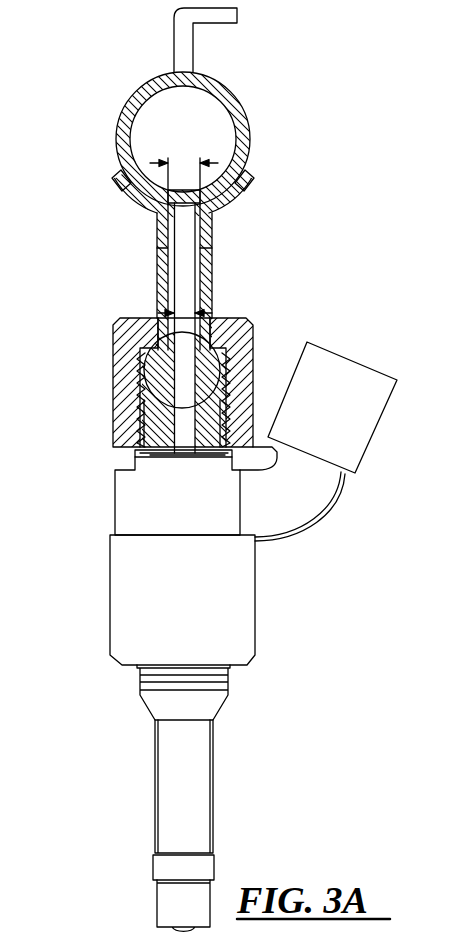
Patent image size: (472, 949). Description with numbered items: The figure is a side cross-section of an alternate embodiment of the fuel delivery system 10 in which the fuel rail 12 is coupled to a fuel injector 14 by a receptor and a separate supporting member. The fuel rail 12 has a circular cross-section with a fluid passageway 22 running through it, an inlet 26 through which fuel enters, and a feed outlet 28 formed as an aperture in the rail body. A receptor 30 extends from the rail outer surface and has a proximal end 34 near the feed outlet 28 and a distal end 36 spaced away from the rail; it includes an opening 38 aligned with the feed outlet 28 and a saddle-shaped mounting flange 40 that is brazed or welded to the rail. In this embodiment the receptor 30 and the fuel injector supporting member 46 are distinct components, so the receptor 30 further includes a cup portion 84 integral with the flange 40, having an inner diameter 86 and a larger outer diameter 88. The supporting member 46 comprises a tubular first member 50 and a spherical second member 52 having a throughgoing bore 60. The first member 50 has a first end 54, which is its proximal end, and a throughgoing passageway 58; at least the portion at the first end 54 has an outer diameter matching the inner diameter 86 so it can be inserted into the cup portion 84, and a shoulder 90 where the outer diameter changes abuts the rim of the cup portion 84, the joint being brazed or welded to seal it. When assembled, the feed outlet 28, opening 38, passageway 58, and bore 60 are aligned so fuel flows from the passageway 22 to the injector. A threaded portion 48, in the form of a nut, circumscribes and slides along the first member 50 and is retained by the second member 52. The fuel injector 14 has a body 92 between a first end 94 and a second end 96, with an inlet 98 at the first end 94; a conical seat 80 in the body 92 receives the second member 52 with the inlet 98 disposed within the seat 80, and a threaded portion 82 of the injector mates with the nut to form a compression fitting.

The fuel delivery system 10 is at (80, 110).
The fuel rail 12 is at (243, 128).
The fuel injector 14 is at (115, 505).
The fluid passageway 22 is at (190, 130).
The inlet 26 is at (217, 12).
The feed outlet 28 is at (187, 208).
The receptor 30 is at (120, 180).
The proximal end 34 is at (262, 186).
The distal end 36 is at (130, 220).
The opening 38 is at (200, 222).
The mounting flange 40 is at (244, 180).
The fuel injector supporting member 46 is at (160, 278).
The threaded portion 48 is at (140, 396).
The first member 50 is at (208, 285).
The second member 52 is at (158, 363).
The first end 54 is at (236, 220).
The throughgoing passageway 58 is at (173, 296).
The throughgoing bore 60 is at (185, 369).
The seat 80 is at (218, 471).
The threaded portion 82 is at (210, 390).
The cup portion 84 is at (153, 232).
The inner diameter 86 is at (181, 172).
The outer diameter 88 is at (211, 303).
The shoulder 90 is at (213, 250).
The body 92 is at (256, 573).
The first end 94 is at (90, 424).
The second end 96 is at (125, 838).
The inlet 98 is at (130, 456).